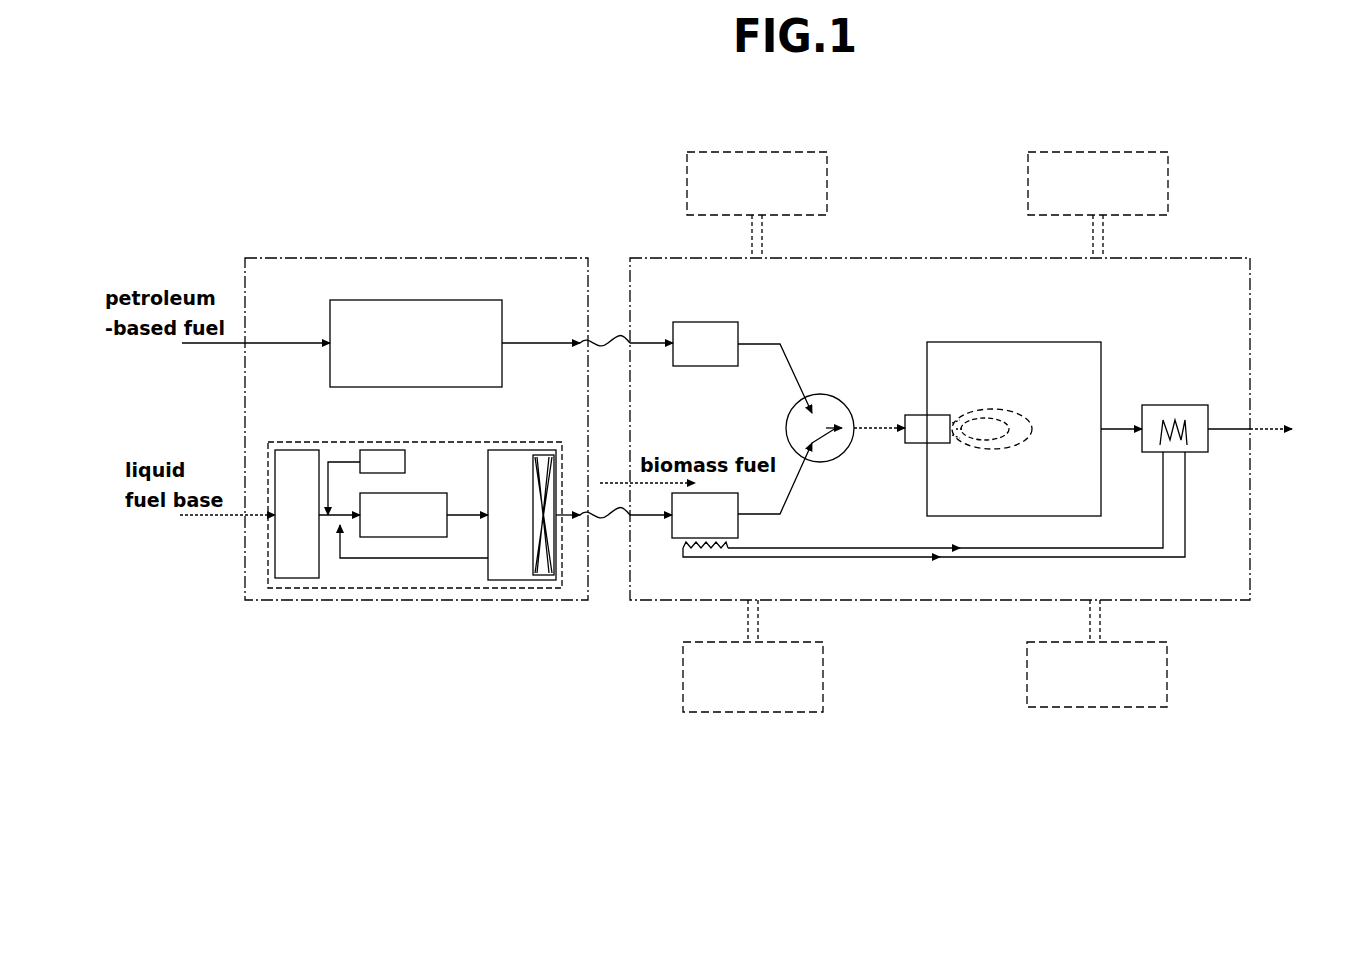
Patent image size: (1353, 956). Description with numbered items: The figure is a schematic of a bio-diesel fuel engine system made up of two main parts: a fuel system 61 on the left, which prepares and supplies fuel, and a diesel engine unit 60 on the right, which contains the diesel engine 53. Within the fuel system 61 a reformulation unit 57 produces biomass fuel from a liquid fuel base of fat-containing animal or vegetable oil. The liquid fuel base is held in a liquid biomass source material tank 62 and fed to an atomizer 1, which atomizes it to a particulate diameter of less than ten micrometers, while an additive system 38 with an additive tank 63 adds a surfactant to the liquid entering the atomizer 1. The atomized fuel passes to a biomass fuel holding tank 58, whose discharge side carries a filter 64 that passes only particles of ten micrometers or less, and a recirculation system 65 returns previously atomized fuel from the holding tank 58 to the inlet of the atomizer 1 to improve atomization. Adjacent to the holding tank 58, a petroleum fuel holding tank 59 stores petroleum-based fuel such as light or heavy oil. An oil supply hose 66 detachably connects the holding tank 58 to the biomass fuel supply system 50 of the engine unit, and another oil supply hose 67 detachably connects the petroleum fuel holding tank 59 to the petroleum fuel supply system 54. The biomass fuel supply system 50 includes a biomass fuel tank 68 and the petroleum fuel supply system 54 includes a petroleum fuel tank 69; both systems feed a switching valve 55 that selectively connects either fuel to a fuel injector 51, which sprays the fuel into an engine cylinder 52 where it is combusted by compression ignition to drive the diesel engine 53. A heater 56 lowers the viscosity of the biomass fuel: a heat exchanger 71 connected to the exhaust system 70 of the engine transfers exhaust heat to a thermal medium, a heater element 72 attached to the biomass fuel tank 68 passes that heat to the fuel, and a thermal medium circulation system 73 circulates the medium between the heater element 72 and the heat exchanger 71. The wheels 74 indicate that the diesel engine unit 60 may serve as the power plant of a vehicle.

The atomizer 1 is at (393, 537).
The additive system 38 is at (340, 461).
The biomass fuel supply system 50 is at (802, 491).
The fuel injector 51 is at (915, 415).
The engine cylinder 52 is at (1038, 342).
The diesel engine 53 is at (1115, 355).
The petroleum fuel supply system 54 is at (792, 344).
The switching valve 55 is at (830, 394).
The heater 56 is at (700, 570).
The reformulation unit 57 is at (318, 590).
The biomass fuel holding tank 58 is at (505, 580).
The petroleum fuel holding tank 59 is at (462, 300).
The diesel engine unit 60 is at (1252, 283).
The fuel system 61 is at (560, 256).
The liquid biomass source material tank 62 is at (300, 450).
The additive tank 63 is at (380, 450).
The filter 64 is at (543, 455).
The recirculation system 65 is at (440, 558).
The oil supply hose 66 is at (605, 525).
The oil supply hose 67 is at (608, 340).
The biomass fuel tank 68 is at (738, 528).
The petroleum fuel tank 69 is at (708, 322).
The exhaust system 70 is at (1228, 428).
The heat exchanger 71 is at (1183, 405).
The heater element 72 is at (683, 551).
The thermal medium circulation system 73 is at (905, 558).
The wheels 74 is at (1130, 152).